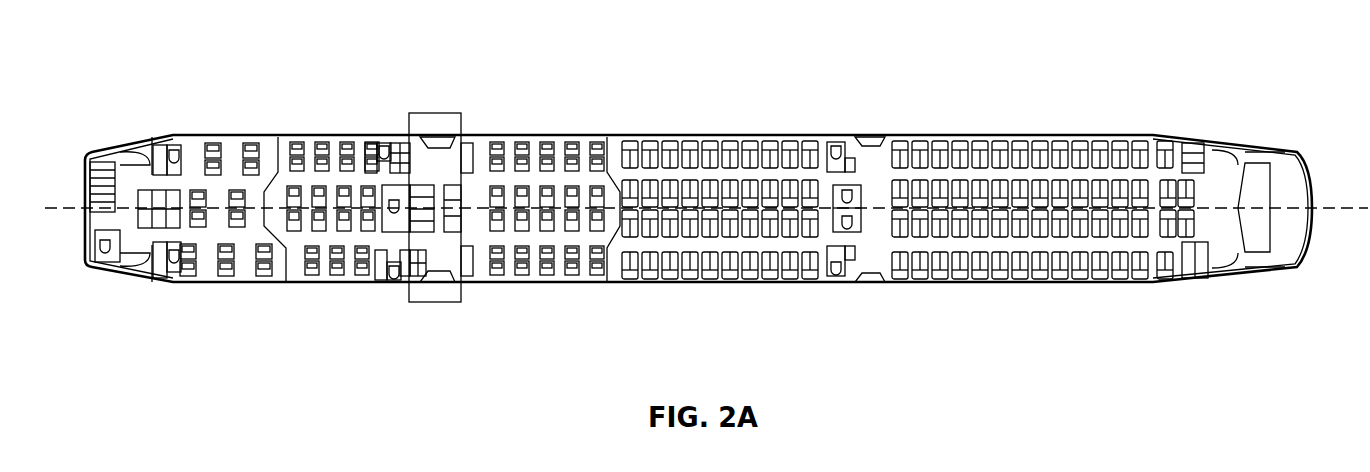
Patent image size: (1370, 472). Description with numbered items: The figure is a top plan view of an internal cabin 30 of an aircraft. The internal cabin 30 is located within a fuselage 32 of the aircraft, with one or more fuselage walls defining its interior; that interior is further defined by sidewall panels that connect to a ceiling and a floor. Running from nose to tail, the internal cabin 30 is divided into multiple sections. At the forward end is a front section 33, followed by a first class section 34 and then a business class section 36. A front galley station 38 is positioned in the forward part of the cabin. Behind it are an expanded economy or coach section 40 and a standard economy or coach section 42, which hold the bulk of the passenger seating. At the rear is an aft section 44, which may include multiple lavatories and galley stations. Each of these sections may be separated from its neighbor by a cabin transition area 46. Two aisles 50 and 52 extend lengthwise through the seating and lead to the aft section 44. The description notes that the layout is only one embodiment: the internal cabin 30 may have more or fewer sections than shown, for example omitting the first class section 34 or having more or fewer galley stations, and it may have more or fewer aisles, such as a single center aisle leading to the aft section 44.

The internal cabin 30 is at (228, 47).
The fuselage 32 is at (560, 102).
The front section 33 is at (150, 290).
The first class section 34 is at (243, 283).
The business class section 36 is at (312, 137).
The front galley station 38 is at (435, 298).
The expanded economy or coach section 40 is at (535, 283).
The standard economy or coach section 42 is at (663, 137).
The aft section 44 is at (1232, 165).
The cabin transition area 46 is at (160, 137).
The aisle 50 is at (1025, 175).
The aisle 52 is at (1043, 243).